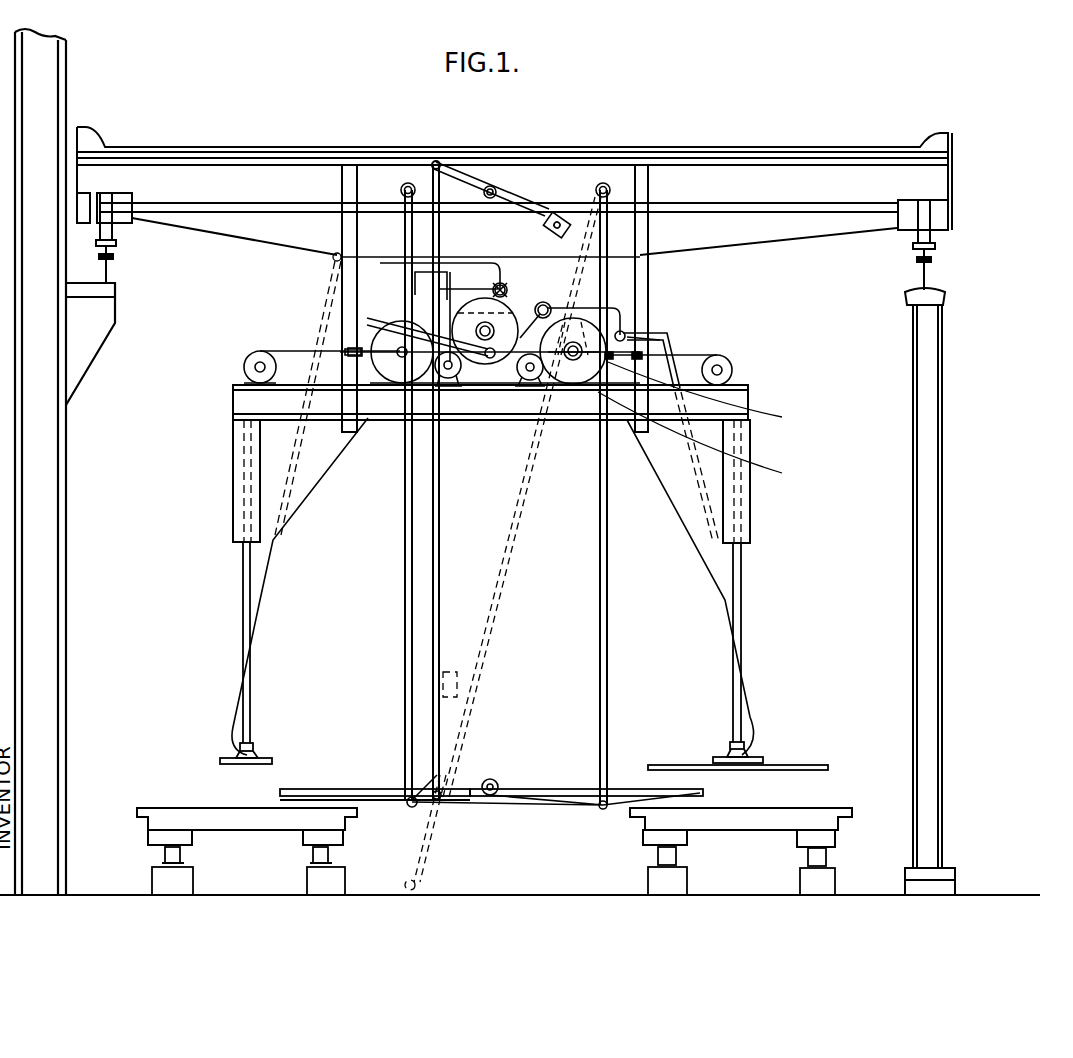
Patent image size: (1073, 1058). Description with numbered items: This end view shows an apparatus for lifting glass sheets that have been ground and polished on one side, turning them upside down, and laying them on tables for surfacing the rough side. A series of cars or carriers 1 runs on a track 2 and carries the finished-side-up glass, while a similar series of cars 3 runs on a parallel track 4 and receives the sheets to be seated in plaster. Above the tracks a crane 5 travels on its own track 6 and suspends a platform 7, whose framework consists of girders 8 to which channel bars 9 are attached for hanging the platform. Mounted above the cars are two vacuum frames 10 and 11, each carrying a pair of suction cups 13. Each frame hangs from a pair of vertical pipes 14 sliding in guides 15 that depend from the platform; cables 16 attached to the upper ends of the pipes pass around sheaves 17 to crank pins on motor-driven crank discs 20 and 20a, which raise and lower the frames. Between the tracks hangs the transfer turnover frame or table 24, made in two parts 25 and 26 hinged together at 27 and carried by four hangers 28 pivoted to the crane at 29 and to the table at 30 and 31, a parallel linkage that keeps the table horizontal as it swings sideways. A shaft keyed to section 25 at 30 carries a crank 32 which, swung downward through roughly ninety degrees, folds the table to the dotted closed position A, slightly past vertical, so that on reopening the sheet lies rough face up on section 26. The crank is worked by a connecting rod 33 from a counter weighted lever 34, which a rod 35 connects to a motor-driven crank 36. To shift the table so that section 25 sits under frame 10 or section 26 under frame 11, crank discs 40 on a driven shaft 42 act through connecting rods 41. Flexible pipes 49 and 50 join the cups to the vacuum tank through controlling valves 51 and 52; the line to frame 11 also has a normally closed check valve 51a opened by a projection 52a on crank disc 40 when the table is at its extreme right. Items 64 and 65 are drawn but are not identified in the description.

The cars or carriers 1 is at (203, 808).
The track 2 is at (162, 859).
The cars or carriers 3 is at (807, 810).
The track 4 is at (655, 862).
The crane 5 is at (800, 197).
The track 6 is at (110, 270).
The platform 7 is at (312, 368).
The girders 8 is at (388, 412).
The channel bars 9 is at (340, 283).
The vacuum frame 10 is at (230, 758).
The vacuum frame 11 is at (762, 758).
The suction cups 13 is at (798, 757).
The vertical pipes 14 is at (242, 634).
The guides 15 is at (235, 522).
The cables 16 is at (278, 350).
The sheaves 17 is at (243, 367).
The crank disc 20 is at (388, 330).
The crank disc 20a is at (585, 327).
The transfer turnover frame or table 24 is at (542, 788).
The table section 25 is at (372, 788).
The table section 26 is at (632, 791).
The hinge 27 is at (492, 798).
The hangers 28 is at (403, 612).
The pivot 29 is at (400, 186).
The pivot 30 is at (410, 810).
The pivot 31 is at (603, 811).
The crank 32 is at (430, 808).
The connecting rod 33 is at (440, 576).
The counter weighted lever 34 is at (480, 172).
The rod 35 is at (575, 252).
The crank 36 is at (533, 382).
The crank discs 40 is at (530, 315).
The connecting rods 41 is at (465, 387).
The shaft 42 is at (483, 328).
The flexible pipe 49 is at (268, 574).
The flexible pipe 50 is at (716, 560).
The controlling valve 51 is at (505, 285).
The vacuum check valve 51a is at (550, 308).
The controlling valve 52 is at (662, 338).
The projection 52a is at (530, 390).
The cable 64 is at (711, 395).
The cable 65 is at (706, 438).
The closed position A is at (473, 697).